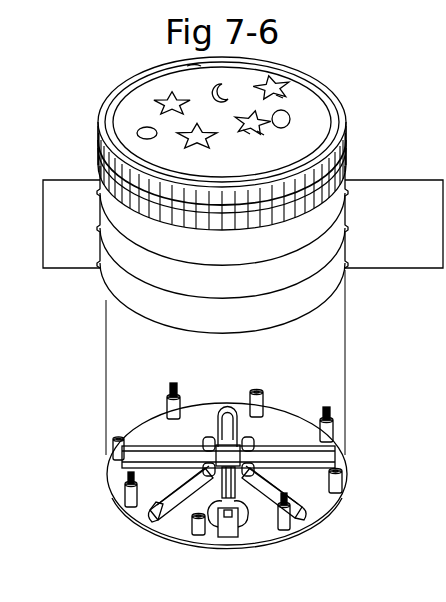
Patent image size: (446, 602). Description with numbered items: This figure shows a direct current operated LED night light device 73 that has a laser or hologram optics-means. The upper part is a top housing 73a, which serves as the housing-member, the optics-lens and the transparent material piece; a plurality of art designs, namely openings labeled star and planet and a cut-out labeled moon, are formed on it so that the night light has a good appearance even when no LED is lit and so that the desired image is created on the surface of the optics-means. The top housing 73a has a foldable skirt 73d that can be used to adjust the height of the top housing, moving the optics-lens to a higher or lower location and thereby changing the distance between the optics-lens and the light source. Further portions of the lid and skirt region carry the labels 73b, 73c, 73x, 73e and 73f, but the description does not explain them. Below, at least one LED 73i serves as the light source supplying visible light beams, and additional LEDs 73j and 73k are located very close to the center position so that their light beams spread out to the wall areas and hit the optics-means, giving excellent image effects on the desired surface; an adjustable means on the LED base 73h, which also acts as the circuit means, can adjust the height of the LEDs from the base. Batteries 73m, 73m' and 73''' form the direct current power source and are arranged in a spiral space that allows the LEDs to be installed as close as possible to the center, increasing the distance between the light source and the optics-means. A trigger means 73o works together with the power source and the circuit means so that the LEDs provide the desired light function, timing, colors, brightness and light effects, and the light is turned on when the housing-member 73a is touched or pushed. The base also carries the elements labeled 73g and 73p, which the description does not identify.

The LED night light device 73 is at (253, 122).
The top housing 73a is at (290, 146).
The lid rim 73b is at (122, 97).
The knurled band 73c is at (322, 198).
The lid edge 73x is at (96, 160).
The foldable skirt 73d is at (235, 249).
The middle ring 73e is at (147, 309).
The bottom ring 73f is at (322, 301).
The left battery bar 73g is at (172, 531).
The LED base 73h is at (336, 453).
The LED 73i is at (227, 433).
The LED 73j is at (256, 437).
The LED 73k is at (204, 440).
The battery 73''' is at (182, 449).
The battery 73m is at (268, 459).
The battery 73m' is at (324, 495).
The trigger means 73o is at (231, 530).
The left post 73p is at (121, 480).
The cut-out moon is at (231, 88).
The opening star is at (286, 86).
The opening planet is at (292, 115).